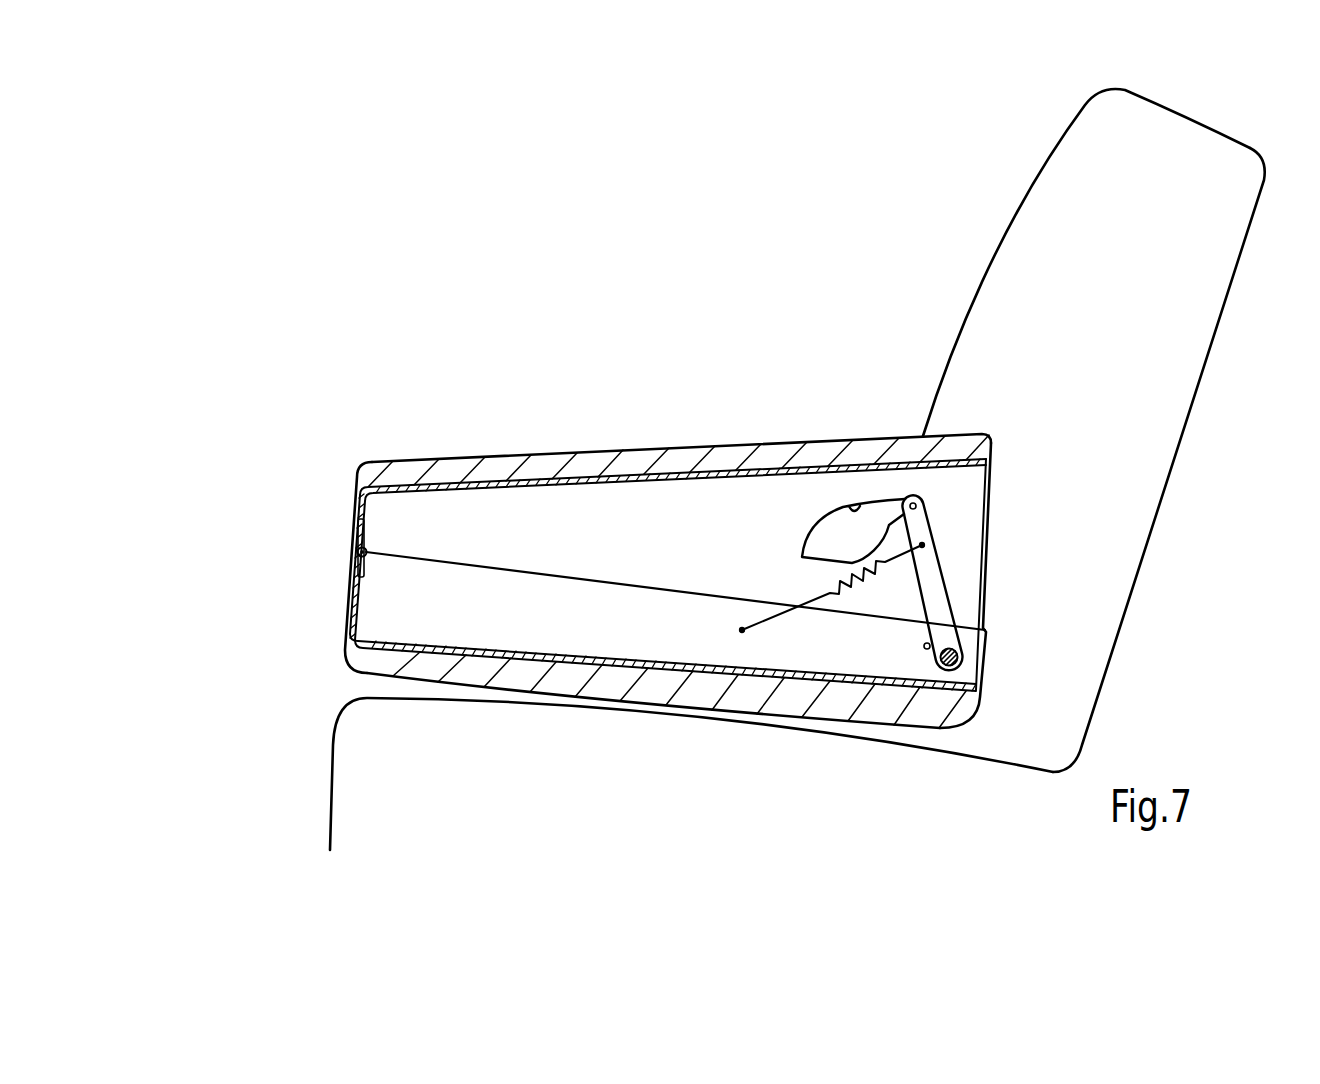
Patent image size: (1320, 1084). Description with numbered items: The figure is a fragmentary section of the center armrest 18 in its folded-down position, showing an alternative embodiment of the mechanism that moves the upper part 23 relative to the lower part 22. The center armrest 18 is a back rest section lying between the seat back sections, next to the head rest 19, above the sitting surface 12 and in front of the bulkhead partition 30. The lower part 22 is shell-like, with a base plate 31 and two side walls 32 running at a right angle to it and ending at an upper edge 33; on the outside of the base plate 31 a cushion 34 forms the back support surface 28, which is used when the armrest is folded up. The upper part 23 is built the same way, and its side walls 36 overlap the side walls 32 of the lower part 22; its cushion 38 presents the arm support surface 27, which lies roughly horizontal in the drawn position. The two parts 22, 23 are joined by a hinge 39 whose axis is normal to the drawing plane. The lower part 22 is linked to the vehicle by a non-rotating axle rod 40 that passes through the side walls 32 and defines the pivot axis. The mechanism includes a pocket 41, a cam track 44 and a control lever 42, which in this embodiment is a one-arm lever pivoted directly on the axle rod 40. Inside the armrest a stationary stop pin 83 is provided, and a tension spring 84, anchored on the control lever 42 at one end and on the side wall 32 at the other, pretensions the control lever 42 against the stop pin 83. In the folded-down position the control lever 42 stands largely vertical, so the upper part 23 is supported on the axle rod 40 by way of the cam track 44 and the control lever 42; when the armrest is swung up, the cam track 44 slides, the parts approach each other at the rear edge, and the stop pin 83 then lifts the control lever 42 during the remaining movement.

The sitting surface 12 is at (447, 823).
The center armrest 18 is at (213, 379).
The head rest 19 is at (987, 267).
The lower part 22 is at (300, 624).
The upper part 23 is at (334, 427).
The arm support surface 27 is at (474, 458).
The back support surface 28 is at (452, 688).
The bulkhead partition 30 is at (1175, 470).
The base plate 31 is at (483, 651).
The side wall 32 is at (437, 619).
The upper edge 33 is at (623, 589).
The cushion 34 is at (550, 678).
The side wall 36 is at (626, 537).
The cushion 38 is at (608, 466).
The hinge 39 is at (366, 550).
The axle rod 40 is at (963, 664).
The pocket 41 is at (786, 520).
The control lever 42 is at (965, 556).
The cam track 44 is at (856, 506).
The stop pin 83 is at (926, 650).
The tension spring 84 is at (850, 594).